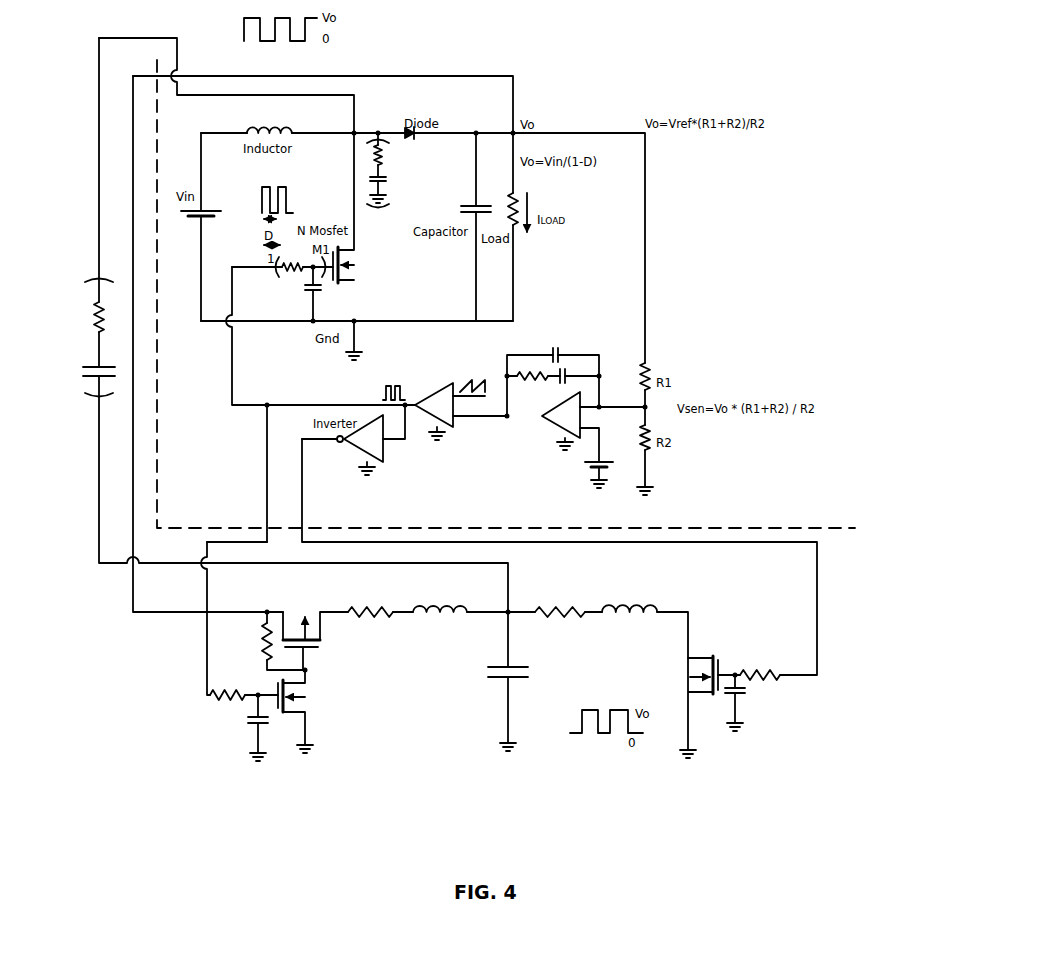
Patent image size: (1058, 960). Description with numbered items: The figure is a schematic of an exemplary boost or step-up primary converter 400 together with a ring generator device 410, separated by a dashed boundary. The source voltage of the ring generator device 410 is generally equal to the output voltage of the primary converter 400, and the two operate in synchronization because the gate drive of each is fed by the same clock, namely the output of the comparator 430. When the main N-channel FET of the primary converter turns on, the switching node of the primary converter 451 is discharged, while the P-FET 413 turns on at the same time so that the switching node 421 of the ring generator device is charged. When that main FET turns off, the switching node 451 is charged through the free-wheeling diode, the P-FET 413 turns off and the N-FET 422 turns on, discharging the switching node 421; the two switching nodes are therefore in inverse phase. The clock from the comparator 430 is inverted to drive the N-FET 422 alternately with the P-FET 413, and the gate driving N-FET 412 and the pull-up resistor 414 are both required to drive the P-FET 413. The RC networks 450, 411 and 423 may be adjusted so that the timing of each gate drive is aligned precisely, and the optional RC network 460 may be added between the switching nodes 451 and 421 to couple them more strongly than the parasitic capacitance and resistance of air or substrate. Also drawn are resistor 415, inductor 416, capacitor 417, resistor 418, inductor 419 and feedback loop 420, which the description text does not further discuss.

The primary converter 400 is at (752, 520).
The ring generator device 410 is at (752, 547).
The RC network 411 is at (235, 724).
The gate driving N-FET 412 is at (317, 711).
The P-FET 413 is at (320, 649).
The pull-up resistor 414 is at (269, 641).
The resistor 415 is at (380, 634).
The inductor 416 is at (474, 628).
The capacitor 417 is at (487, 681).
The resistor 418 is at (568, 633).
The inductor 419 is at (645, 631).
The feedback loop 420 is at (575, 411).
The switching node of the ring generator device 421 is at (518, 631).
The N-FET 422 is at (690, 707).
The RC network 423 is at (769, 706).
The comparator 430 is at (447, 437).
The RC network 450 is at (297, 289).
The switching node of the primary converter 451 is at (373, 116).
The RC network 460 is at (68, 300).